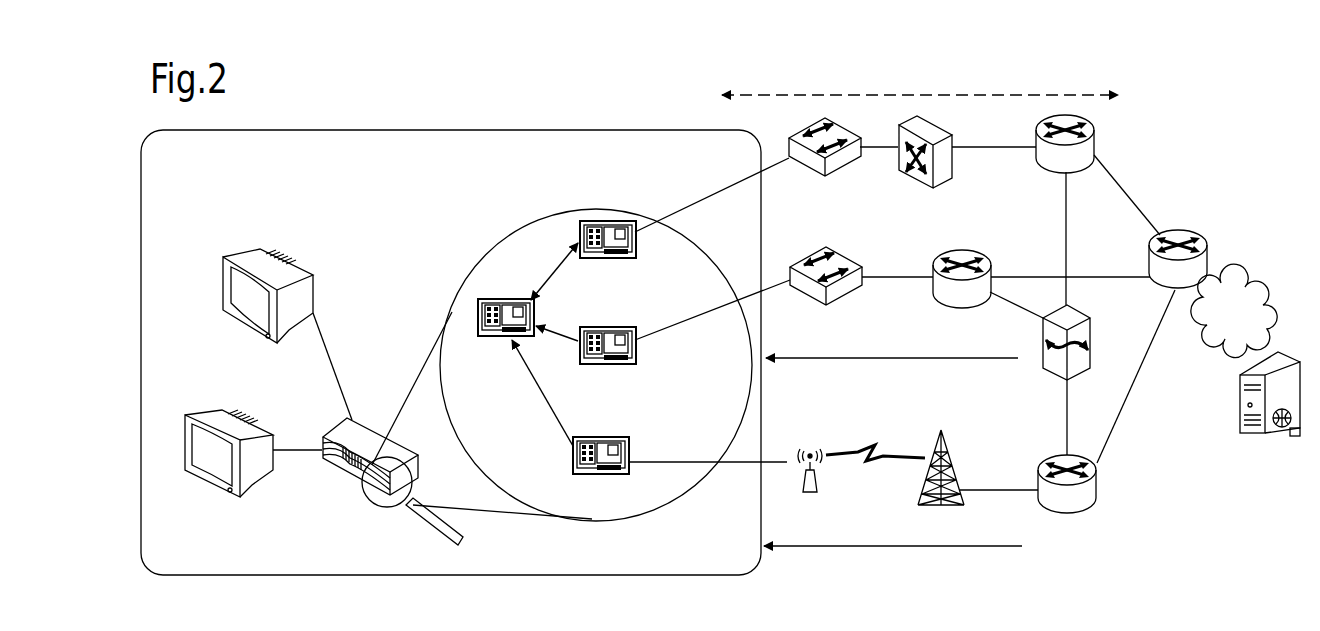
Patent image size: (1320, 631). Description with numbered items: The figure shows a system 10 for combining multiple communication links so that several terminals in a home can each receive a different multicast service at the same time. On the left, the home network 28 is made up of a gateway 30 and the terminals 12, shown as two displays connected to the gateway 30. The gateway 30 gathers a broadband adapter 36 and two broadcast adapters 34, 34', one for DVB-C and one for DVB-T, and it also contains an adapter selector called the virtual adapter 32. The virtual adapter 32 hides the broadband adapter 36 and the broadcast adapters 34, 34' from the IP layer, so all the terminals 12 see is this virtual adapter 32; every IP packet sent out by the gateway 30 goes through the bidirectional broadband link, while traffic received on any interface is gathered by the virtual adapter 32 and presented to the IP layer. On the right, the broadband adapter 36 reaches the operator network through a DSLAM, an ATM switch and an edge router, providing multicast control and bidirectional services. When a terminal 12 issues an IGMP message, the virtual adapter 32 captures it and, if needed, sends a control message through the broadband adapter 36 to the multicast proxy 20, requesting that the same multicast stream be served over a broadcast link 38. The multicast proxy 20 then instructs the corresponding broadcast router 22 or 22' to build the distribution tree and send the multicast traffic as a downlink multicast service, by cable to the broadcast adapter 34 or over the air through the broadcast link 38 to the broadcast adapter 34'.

The system for combining multiple communication links 10 is at (1159, 179).
The terminal 12 is at (226, 290).
The multicast proxy 20 is at (1092, 328).
The broadcast router 22 is at (958, 306).
The broadcast router 22' is at (984, 518).
The home network 28 is at (427, 130).
The gateway 30 is at (352, 487).
The virtual adapter 32 is at (490, 300).
The broadcast adapter 34 is at (677, 345).
The broadcast adapter 34' is at (646, 464).
The broadband adapter 36 is at (600, 220).
The broadcast link 38 is at (857, 358).